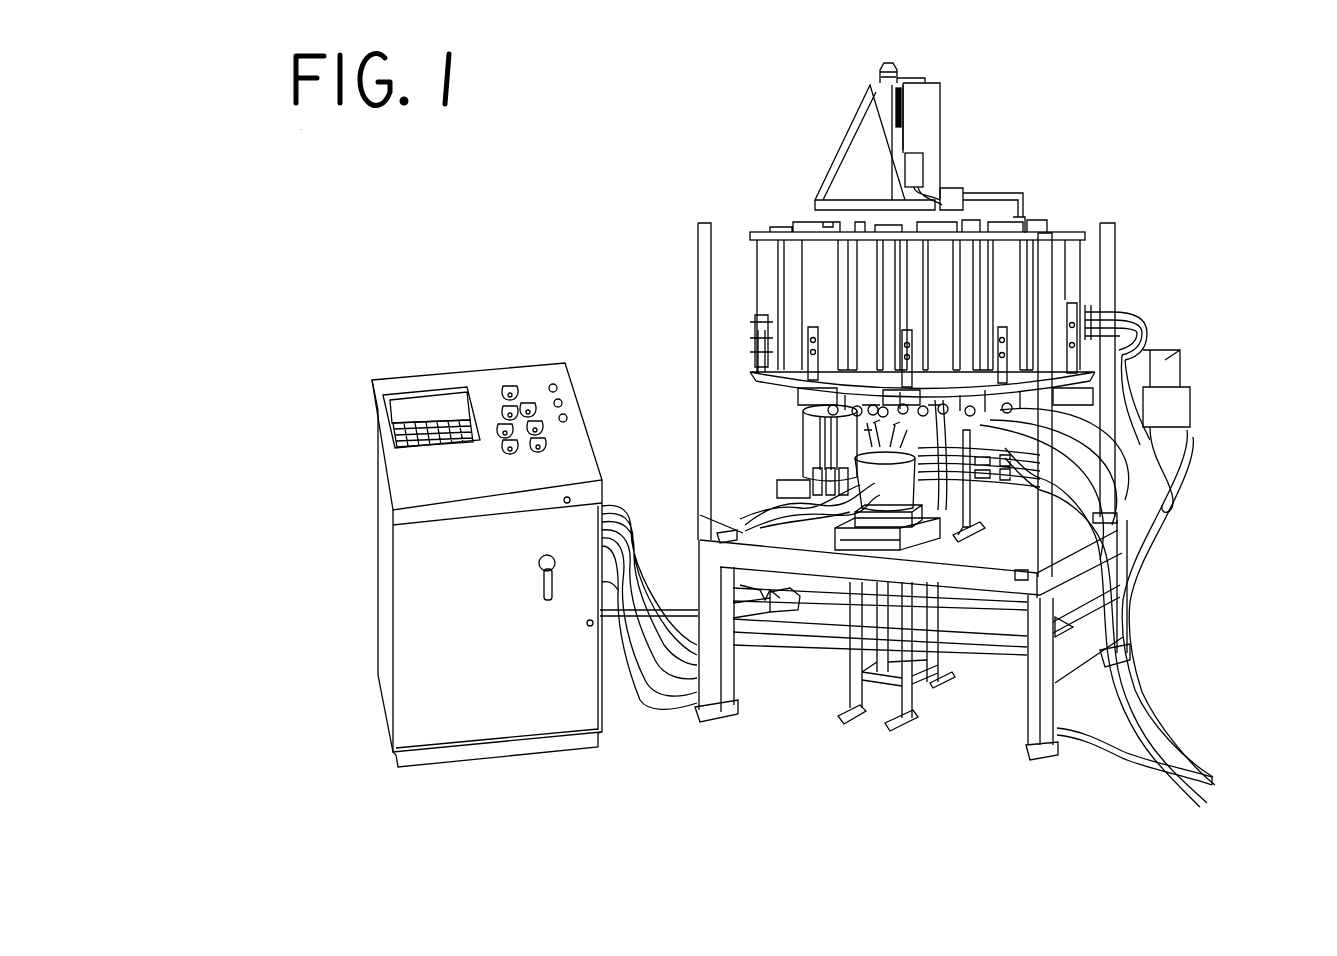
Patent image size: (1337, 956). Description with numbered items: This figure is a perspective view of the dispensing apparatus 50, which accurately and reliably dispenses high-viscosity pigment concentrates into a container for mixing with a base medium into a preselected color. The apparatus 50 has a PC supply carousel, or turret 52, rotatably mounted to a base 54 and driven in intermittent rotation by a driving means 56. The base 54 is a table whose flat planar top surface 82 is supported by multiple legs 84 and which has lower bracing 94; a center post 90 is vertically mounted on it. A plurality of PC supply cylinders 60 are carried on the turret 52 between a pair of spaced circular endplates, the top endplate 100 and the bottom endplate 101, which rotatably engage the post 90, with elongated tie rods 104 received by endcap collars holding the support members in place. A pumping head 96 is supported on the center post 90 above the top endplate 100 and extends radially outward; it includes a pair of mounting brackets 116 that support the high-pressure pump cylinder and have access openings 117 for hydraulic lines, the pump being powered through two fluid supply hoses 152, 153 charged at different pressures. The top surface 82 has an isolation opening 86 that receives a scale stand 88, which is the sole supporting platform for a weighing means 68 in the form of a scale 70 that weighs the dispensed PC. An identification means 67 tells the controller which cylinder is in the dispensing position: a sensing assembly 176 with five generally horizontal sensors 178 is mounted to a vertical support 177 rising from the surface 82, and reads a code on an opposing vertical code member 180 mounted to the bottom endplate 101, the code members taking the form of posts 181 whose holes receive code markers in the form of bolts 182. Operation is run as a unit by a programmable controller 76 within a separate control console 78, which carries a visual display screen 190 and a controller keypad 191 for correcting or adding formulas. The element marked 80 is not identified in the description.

The dispensing apparatus 50 is at (752, 152).
The turret 52 is at (1120, 248).
The base 54 is at (1015, 723).
The driving means 56 is at (790, 425).
The PC supply cylinders 60 is at (787, 280).
The identification means 67 is at (1165, 330).
The weighing means 68 is at (850, 592).
The scale 70 is at (833, 540).
The programmable controller 76 is at (460, 390).
The control console 78 is at (380, 514).
The left post 80 is at (730, 706).
The top surface 82 is at (743, 532).
The legs 84 is at (727, 690).
The isolation opening 86 is at (925, 532).
The scale stand 88 is at (846, 693).
The center post 90 is at (926, 85).
The lower bracing 94 is at (987, 640).
The pumping head 96 is at (943, 108).
The top endplate 100 is at (1066, 230).
The bottom endplate 101 is at (753, 372).
The tie rods 104 is at (773, 248).
The mounting brackets 116 is at (935, 131).
The access openings 117 is at (925, 162).
The fluid supply hose 152 is at (930, 187).
The fluid supply hose 153 is at (975, 190).
The sensing assembly 176 is at (1180, 373).
The vertical support 177 is at (1108, 243).
The sensors 178 is at (1110, 315).
The code member 180 is at (757, 345).
The posts 181 is at (752, 327).
The bolts 182 is at (808, 350).
The visual display screen 190 is at (408, 410).
The controller keypad 191 is at (372, 425).